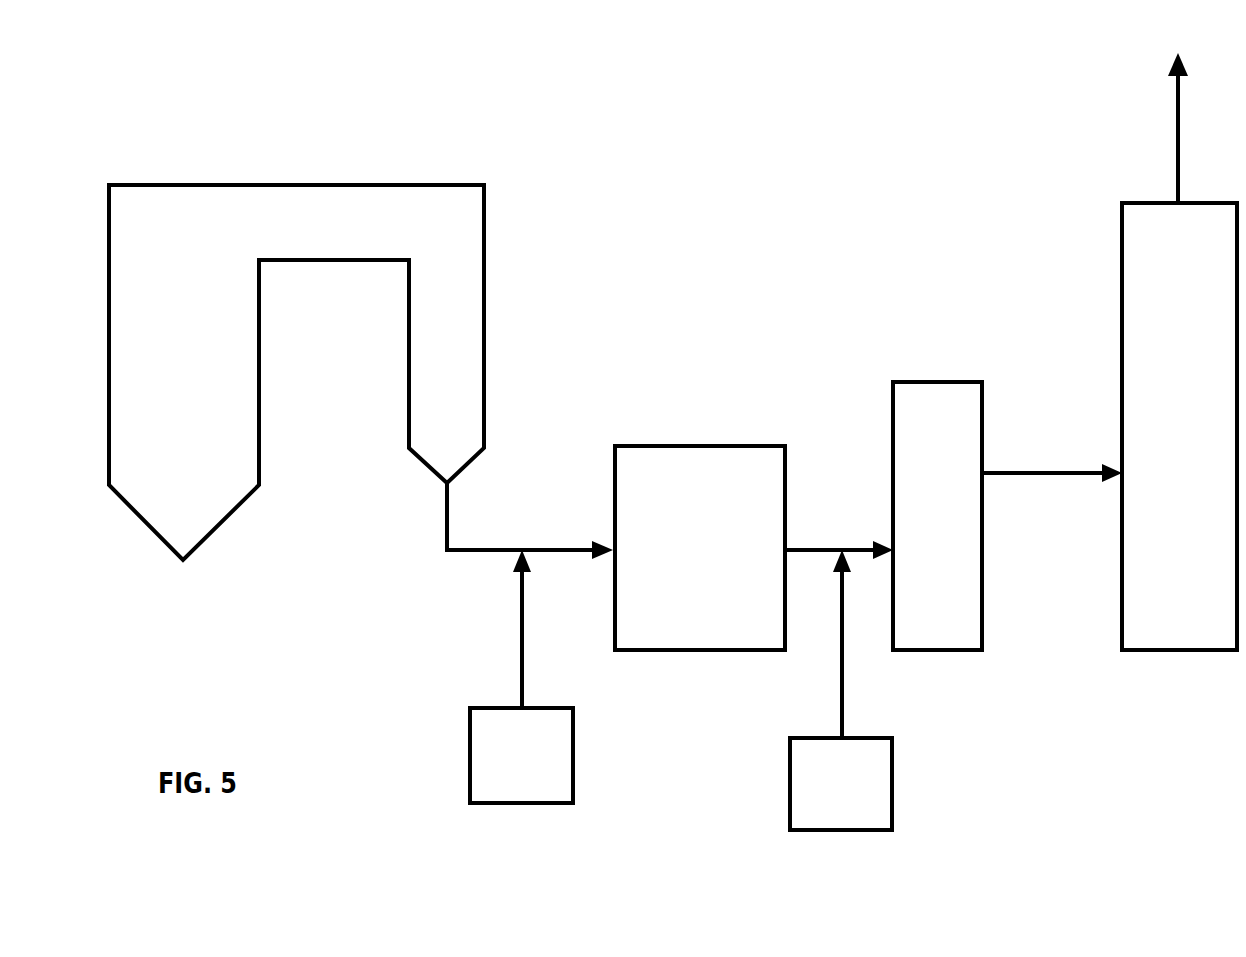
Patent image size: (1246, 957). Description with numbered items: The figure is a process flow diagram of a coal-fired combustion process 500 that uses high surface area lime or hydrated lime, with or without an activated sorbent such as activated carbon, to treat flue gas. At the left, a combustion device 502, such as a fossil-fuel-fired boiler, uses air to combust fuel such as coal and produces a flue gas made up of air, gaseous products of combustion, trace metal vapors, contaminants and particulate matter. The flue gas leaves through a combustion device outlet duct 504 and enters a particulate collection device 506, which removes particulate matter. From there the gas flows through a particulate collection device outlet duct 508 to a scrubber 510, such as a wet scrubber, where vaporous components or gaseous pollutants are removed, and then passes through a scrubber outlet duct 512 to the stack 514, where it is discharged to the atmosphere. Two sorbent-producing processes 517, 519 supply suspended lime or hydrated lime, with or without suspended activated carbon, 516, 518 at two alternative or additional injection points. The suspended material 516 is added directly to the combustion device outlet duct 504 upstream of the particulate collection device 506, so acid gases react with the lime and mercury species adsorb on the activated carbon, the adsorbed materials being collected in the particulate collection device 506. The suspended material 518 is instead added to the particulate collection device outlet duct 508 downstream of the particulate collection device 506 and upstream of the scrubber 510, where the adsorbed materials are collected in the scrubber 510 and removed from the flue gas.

The coal-fired combustion process 500 is at (763, 167).
The combustion device 502 is at (297, 183).
The combustion device outlet duct 504 is at (443, 512).
The particulate collection device 506 is at (672, 446).
The particulate collection device outlet duct 508 is at (813, 548).
The scrubber 510 is at (945, 650).
The scrubber outlet duct 512 is at (1008, 477).
The stack 514 is at (1122, 240).
The suspended lime or hydrated lime with or without suspended activated sorbent 516 is at (517, 580).
The lime or hydrated lime suspension process 517 is at (470, 740).
The suspended lime or hydrated lime with or without suspended activated sorbent 518 is at (840, 658).
The lime or hydrated lime suspension process 519 is at (790, 765).